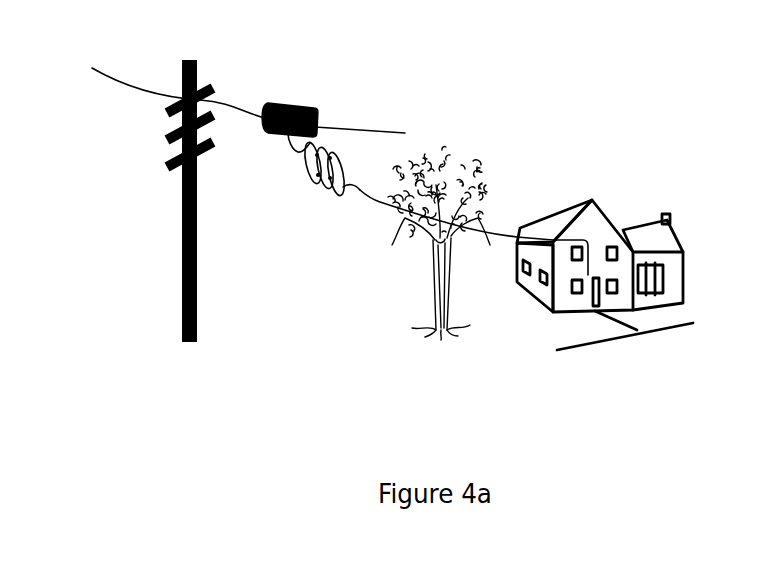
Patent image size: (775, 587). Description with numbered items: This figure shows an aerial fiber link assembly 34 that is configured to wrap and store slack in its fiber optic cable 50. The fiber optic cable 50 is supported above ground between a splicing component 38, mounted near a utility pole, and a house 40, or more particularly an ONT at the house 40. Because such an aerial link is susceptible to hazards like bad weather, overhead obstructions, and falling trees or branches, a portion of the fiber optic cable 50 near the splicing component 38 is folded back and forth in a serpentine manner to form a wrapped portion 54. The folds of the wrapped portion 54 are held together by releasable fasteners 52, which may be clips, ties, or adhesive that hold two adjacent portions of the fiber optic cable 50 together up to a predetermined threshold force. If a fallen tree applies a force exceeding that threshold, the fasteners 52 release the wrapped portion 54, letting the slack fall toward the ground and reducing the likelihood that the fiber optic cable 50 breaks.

The fiber link assembly 34 is at (563, 115).
The splicing component 38 is at (288, 110).
The house 40 is at (650, 242).
The fiber optic cable 50 is at (372, 200).
The releasable fasteners 52 is at (338, 153).
The wrapped portion 54 is at (298, 203).